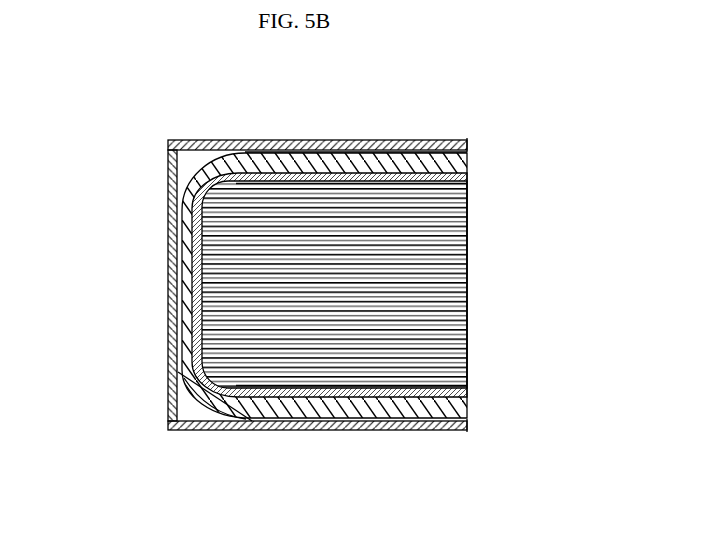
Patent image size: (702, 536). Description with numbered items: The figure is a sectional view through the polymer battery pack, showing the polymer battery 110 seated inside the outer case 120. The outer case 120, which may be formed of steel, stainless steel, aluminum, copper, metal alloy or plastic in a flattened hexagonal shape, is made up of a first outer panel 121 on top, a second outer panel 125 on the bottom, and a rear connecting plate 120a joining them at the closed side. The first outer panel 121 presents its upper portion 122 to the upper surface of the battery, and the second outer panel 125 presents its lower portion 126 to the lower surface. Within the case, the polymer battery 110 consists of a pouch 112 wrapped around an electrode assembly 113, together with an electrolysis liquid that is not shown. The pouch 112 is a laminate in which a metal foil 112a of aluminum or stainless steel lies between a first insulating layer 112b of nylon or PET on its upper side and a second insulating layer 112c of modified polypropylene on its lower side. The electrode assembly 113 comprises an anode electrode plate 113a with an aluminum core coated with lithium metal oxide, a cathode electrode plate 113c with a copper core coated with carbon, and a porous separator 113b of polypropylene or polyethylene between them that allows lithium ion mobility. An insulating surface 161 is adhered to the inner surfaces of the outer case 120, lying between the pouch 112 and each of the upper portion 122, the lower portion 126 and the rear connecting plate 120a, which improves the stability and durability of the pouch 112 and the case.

The polymer battery 110 is at (473, 280).
The pouch 112 is at (324, 240).
The metal foil 112a is at (387, 178).
The first insulating layer 112b is at (336, 170).
The second insulating layer 112c is at (338, 93).
The electrode assembly 113 is at (324, 331).
The anode electrode plate 113a is at (423, 398).
The separator 113b is at (387, 390).
The cathode electrode plate 113c is at (438, 477).
The outer case 120 is at (341, 286).
The rear connecting plate 120a is at (168, 277).
The first outer panel 121 is at (449, 132).
The upper portion 122 is at (257, 141).
The second outer panel 125 is at (525, 405).
The lower portion 126 is at (258, 433).
The insulating surface 161 is at (292, 153).